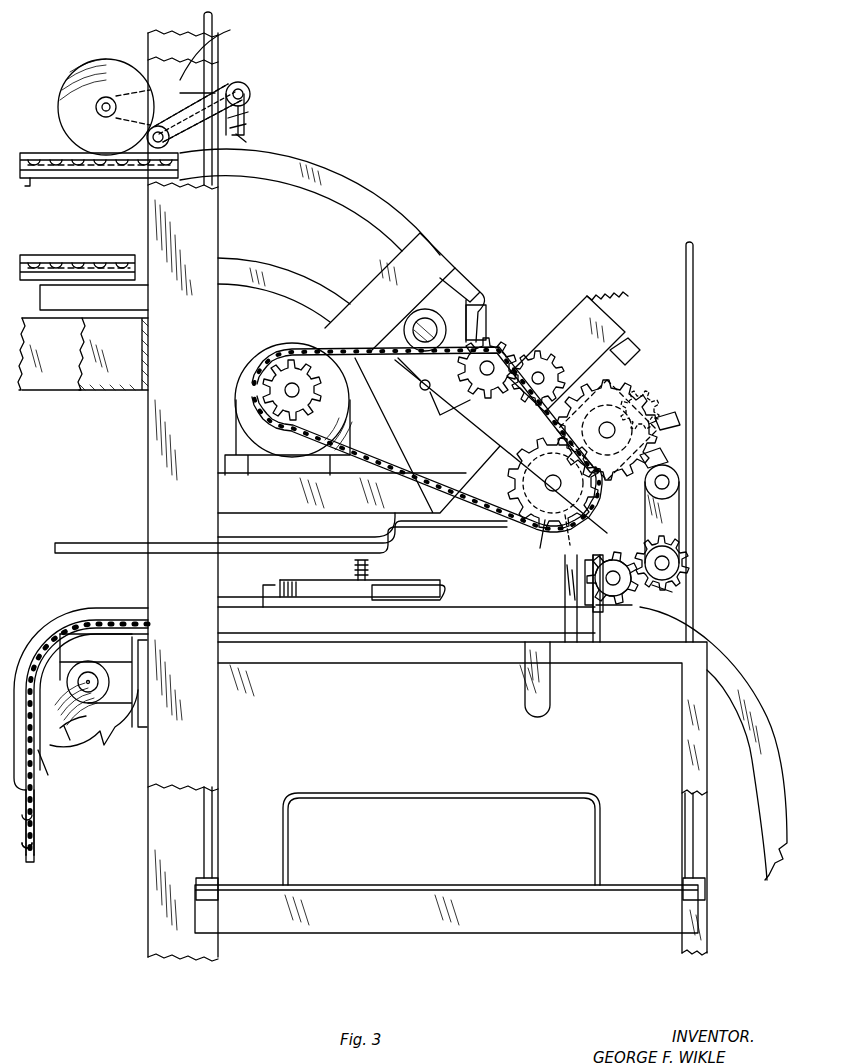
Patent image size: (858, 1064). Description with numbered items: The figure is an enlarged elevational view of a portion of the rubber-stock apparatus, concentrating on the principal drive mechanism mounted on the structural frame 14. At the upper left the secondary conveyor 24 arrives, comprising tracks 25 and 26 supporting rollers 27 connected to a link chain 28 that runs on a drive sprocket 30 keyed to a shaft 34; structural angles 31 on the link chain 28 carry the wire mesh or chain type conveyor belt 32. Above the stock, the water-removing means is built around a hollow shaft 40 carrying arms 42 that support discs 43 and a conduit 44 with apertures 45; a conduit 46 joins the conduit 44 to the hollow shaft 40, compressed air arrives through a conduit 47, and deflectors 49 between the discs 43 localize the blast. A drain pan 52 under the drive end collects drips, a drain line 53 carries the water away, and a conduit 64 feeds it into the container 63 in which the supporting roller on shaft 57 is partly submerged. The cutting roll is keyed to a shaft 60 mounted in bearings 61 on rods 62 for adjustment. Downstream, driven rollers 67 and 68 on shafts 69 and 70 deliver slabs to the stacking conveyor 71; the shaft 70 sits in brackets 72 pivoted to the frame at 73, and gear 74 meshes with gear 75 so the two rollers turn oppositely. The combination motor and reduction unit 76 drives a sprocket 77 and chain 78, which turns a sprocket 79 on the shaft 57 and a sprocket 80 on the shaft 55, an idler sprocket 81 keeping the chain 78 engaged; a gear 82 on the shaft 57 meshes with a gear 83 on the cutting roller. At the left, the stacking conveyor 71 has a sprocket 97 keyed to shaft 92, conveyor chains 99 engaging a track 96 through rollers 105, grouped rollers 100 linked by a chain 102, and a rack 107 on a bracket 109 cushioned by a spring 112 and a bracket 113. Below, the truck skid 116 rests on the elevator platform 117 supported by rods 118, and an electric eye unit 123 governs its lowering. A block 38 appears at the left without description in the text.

The structural frame 14 is at (148, 935).
The secondary conveyor 24 is at (36, 137).
The track 25 is at (355, 197).
The track 26 is at (303, 292).
The rollers 27 is at (48, 230).
The link chain 28 is at (450, 300).
The drive sprocket 30 is at (470, 300).
The structural angles 31 is at (45, 178).
The conveyor belt 32 is at (92, 260).
The shaft 34 is at (425, 320).
The support block 38 is at (42, 392).
The hollow shaft 40 is at (250, 85).
The arms 42 is at (195, 90).
The discs 43 is at (122, 72).
The conduit 44 is at (185, 100).
The apertures 45 is at (246, 128).
The conduit 46 is at (248, 114).
The conduit 47 is at (240, 135).
The deflectors 49 is at (96, 105).
The drain pan 52 is at (390, 437).
The drain line 53 is at (100, 553).
The shaft 55 is at (490, 362).
The shaft 57 is at (535, 522).
The shaft 60 is at (612, 425).
The bearings 61 is at (665, 458).
The rods 62 is at (680, 422).
The container 63 is at (548, 528).
The conduit 64 is at (450, 525).
The driven roller 67 is at (617, 605).
The roller 68 is at (680, 565).
The shaft 69 is at (612, 598).
The shaft 70 is at (680, 556).
The stacking conveyor 71 is at (42, 585).
The brackets 72 is at (675, 522).
The pivot connection 73 is at (679, 482).
The gear 74 is at (620, 600).
The gear 75 is at (675, 592).
The combination motor and reduction unit 76 is at (243, 410).
The sprocket 77 is at (270, 385).
The chain 78 is at (296, 343).
The sprocket 79 is at (544, 548).
The sprocket 80 is at (536, 372).
The idler sprocket 81 is at (547, 365).
The gear 82 is at (568, 548).
The gear 83 is at (632, 395).
The shaft 92 is at (90, 686).
The track 96 is at (733, 672).
The sprocket 97 is at (78, 745).
The conveyor chains 99 is at (34, 826).
The rollers 100 is at (45, 785).
The chain 102 is at (44, 620).
The rollers 105 is at (40, 848).
The rack 107 is at (388, 600).
The bracket 109 is at (265, 590).
The spring 112 is at (290, 588).
The bracket 113 is at (375, 588).
The truck skid 116 is at (600, 808).
The elevator platform 117 is at (385, 938).
The rods 118 is at (693, 332).
The electric eye unit 123 is at (552, 705).